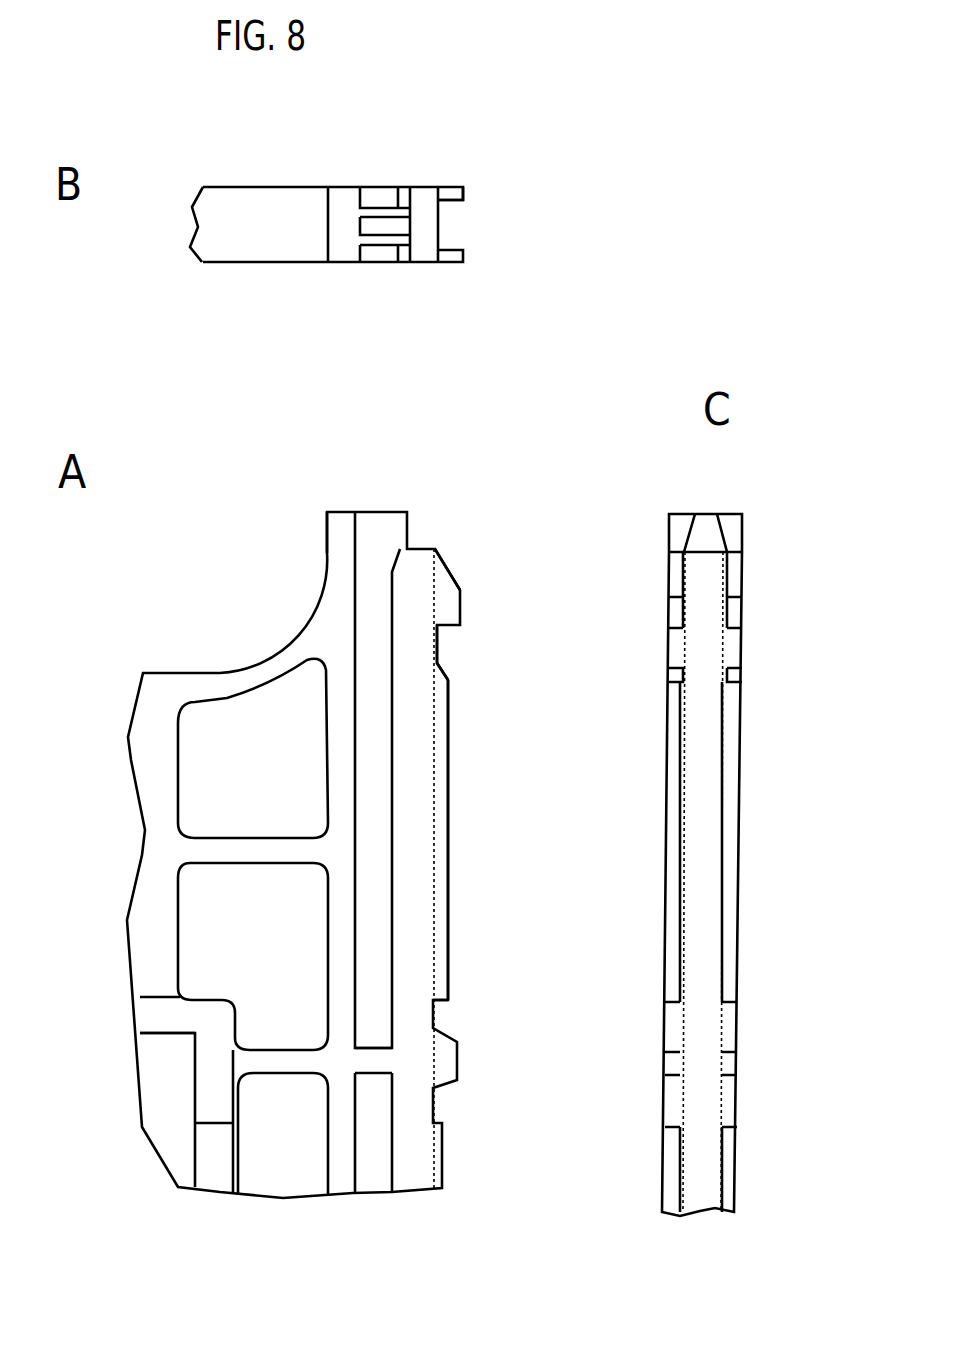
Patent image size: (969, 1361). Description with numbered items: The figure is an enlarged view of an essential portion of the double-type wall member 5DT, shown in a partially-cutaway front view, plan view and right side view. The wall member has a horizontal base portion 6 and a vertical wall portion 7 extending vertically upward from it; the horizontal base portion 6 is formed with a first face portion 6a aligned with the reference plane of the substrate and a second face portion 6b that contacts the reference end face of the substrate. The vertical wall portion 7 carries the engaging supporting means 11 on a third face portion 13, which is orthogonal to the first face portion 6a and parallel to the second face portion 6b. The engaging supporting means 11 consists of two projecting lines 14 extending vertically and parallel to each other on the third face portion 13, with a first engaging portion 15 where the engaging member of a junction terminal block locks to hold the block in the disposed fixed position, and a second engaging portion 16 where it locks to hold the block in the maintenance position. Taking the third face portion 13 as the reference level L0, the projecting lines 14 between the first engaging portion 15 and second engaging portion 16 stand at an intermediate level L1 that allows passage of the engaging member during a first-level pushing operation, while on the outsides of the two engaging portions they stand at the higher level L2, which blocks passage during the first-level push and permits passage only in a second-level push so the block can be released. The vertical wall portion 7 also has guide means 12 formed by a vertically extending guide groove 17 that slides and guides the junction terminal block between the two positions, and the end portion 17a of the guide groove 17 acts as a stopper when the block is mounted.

The double-type wall member 5DT is at (267, 163).
The vertical wall portion 7 is at (237, 252).
The guide groove 17 is at (380, 200).
The end portion of the guide groove 17a is at (370, 1045).
The guide means 12 is at (333, 560).
The engaging supporting means 11 is at (474, 567).
The projecting lines 14 is at (467, 200).
The third face portion 13 is at (440, 227).
The second engaging portion 16 is at (437, 650).
The first engaging portion 15 is at (672, 1024).
The horizontal base portion 6 is at (152, 1017).
The first face portion 6a is at (173, 1033).
The second face portion 6b is at (195, 1087).
The reference level L0 is at (435, 1018).
The intermediate level L1 is at (448, 938).
The outer level L2 is at (460, 607).